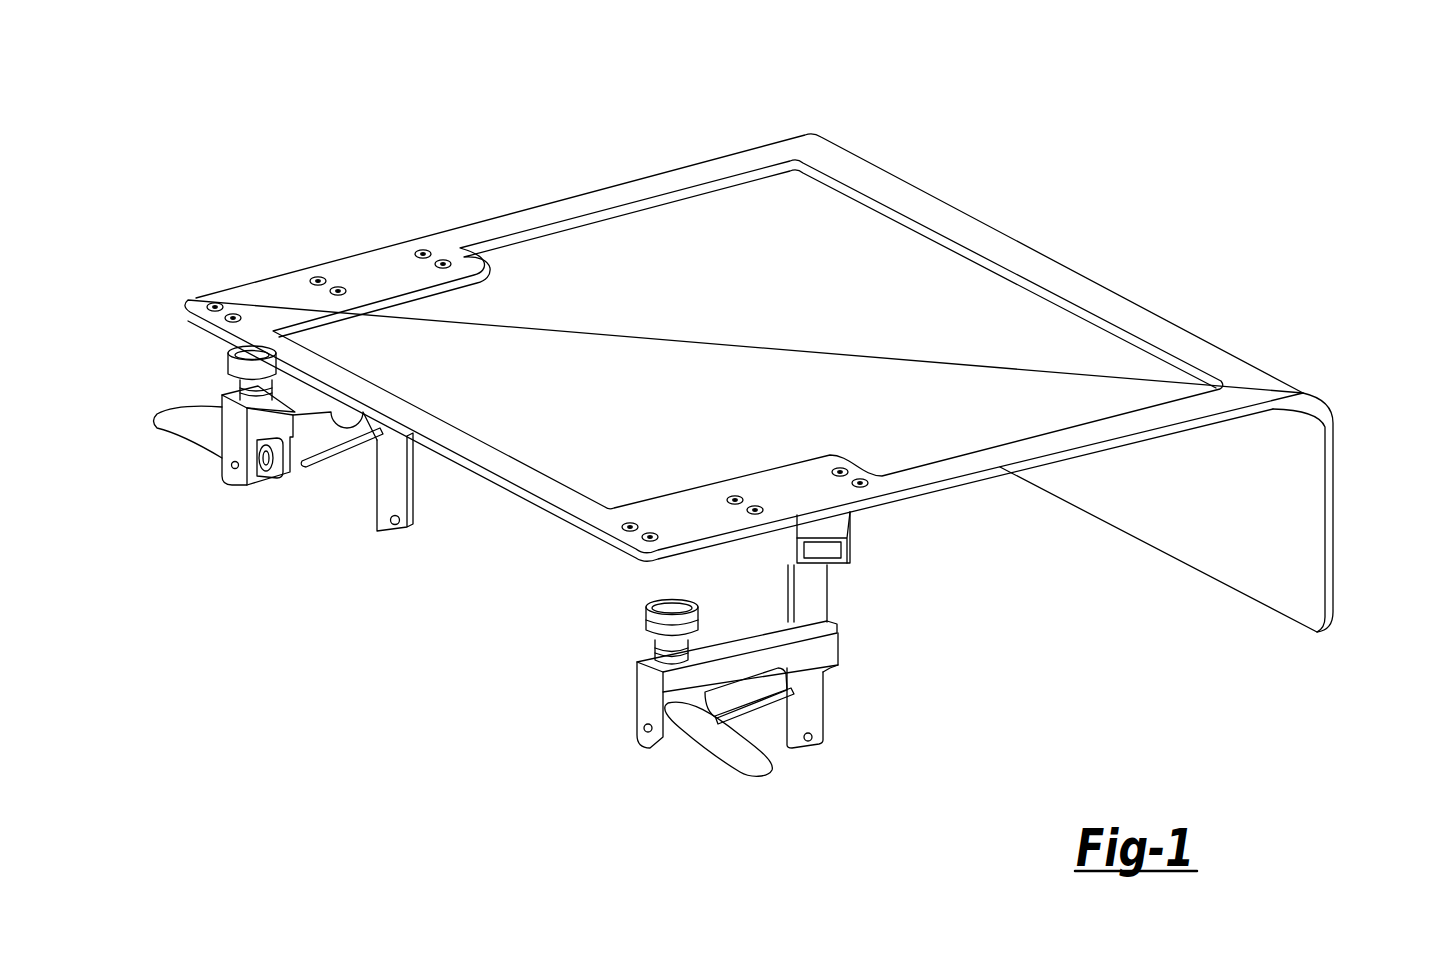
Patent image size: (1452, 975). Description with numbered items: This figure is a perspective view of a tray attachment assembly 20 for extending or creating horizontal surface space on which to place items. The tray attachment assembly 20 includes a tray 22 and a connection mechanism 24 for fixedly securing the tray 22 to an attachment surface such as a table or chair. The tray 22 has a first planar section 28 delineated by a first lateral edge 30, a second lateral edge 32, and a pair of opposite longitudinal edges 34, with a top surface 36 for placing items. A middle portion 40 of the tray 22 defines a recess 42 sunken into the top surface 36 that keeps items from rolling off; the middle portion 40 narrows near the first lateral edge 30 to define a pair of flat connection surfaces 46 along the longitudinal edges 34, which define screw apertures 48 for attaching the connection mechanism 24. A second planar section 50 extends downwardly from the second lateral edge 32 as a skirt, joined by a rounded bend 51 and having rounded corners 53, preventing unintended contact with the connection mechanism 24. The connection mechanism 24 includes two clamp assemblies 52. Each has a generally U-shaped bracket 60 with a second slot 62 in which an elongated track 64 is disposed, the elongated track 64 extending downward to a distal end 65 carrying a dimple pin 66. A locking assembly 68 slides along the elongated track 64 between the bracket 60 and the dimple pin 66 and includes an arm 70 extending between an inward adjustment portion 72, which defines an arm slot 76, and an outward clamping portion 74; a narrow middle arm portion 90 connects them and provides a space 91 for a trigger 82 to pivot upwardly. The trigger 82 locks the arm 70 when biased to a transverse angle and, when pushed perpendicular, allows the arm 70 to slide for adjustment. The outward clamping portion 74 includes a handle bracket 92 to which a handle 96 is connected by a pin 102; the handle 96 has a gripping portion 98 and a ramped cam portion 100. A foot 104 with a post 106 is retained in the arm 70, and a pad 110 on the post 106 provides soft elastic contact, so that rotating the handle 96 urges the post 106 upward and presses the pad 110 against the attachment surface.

The tray attachment assembly 20 is at (297, 128).
The tray 22 is at (650, 176).
The connection mechanism 24 is at (1003, 745).
The first planar section 28 is at (1002, 476).
The first lateral edge 30 is at (495, 468).
The second lateral edge 32 is at (1175, 337).
The longitudinal edges 34 is at (538, 205).
The top surface 36 is at (893, 306).
The middle portion 40 is at (717, 316).
The recess 42 is at (642, 388).
The connection surfaces 46 is at (265, 297).
The screw apertures 48 is at (443, 260).
The second planar section 50 is at (1174, 515).
The bend 51 is at (1305, 400).
The clamp assembly 52 is at (368, 525).
The rounded corners 53 is at (1327, 612).
The bracket 60 is at (850, 526).
The second slot 62 is at (817, 538).
The elongated track 64 is at (818, 707).
The distal end 65 is at (818, 742).
The dimple pin 66 is at (813, 737).
The locking assembly 68 is at (846, 646).
The arm 70 is at (745, 640).
The inward adjustment portion 72 is at (812, 667).
The outward clamping portion 74 is at (645, 688).
The arm slot 76 is at (814, 620).
The trigger 82 is at (340, 435).
The middle arm portion 90 is at (724, 668).
The space 91 is at (297, 432).
The handle bracket 92 is at (634, 720).
The handle 96 is at (697, 755).
The gripping portion 98 is at (755, 762).
The cam portion 100 is at (265, 478).
The pin 102 is at (231, 466).
The foot 104 is at (217, 361).
The post 106 is at (655, 655).
The pad 110 is at (645, 630).